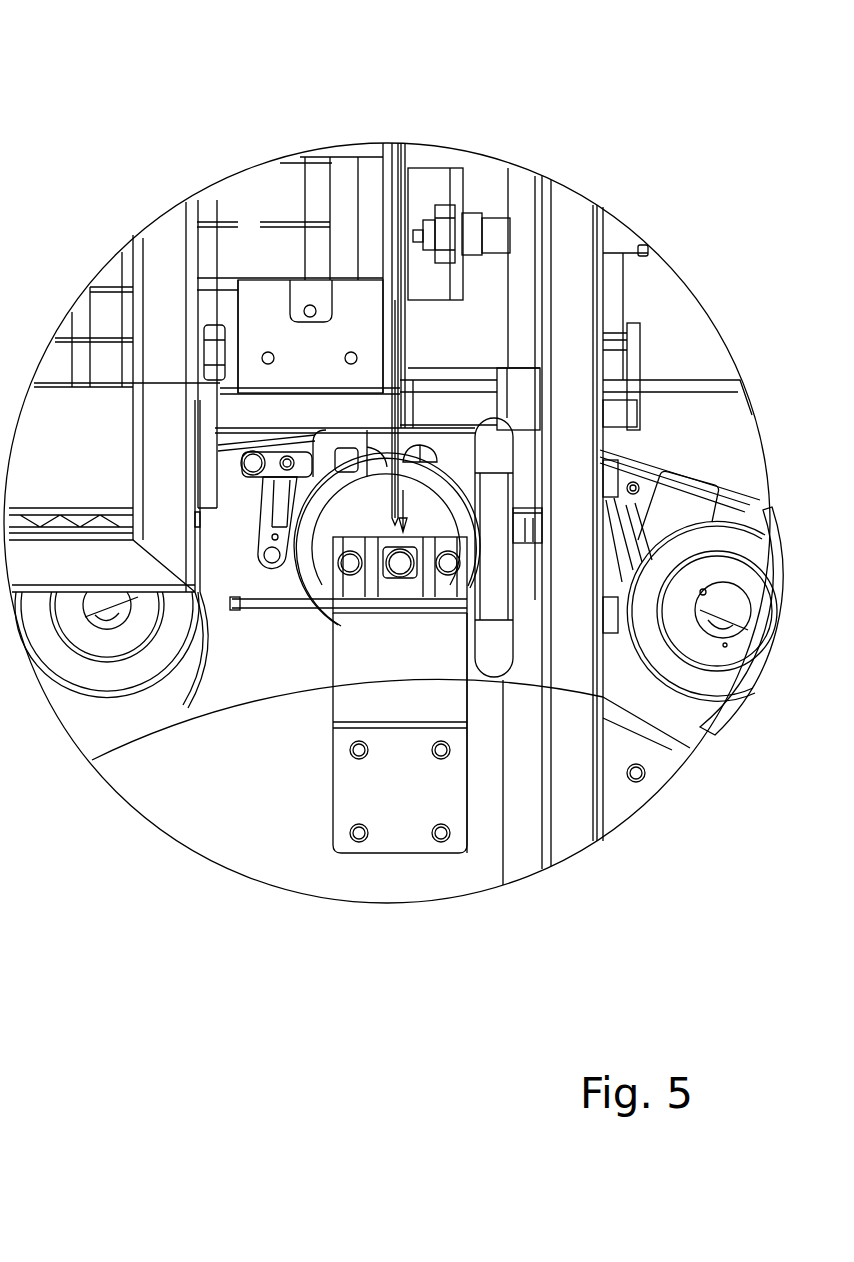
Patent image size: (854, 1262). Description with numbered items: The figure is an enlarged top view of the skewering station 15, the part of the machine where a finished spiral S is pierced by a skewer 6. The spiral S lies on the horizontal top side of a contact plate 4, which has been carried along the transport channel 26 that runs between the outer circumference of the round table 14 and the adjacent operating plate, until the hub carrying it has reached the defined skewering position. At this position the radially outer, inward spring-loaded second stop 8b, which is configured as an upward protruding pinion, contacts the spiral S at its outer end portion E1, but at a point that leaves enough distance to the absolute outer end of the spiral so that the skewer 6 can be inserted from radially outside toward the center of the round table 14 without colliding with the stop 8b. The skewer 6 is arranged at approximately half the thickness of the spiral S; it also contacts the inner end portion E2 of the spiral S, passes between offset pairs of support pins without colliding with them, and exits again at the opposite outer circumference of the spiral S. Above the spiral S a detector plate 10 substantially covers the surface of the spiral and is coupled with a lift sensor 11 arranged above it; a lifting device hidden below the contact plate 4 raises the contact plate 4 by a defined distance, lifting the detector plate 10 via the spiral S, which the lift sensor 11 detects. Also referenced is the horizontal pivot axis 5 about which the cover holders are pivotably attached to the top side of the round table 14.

The skewering station 15 is at (361, 125).
The horizontal pivot axis 5 is at (332, 218).
The skewer 6 is at (398, 322).
The second stop 8b is at (345, 450).
The outer end portion of the spiral E1 is at (436, 454).
The inner end portion E2 is at (104, 496).
The spiral S is at (396, 611).
The contact plate 4 is at (678, 505).
The detector plate 10 is at (400, 562).
The lift sensor 11 is at (400, 568).
The round table 14 is at (347, 741).
The transport channel 26 is at (766, 683).